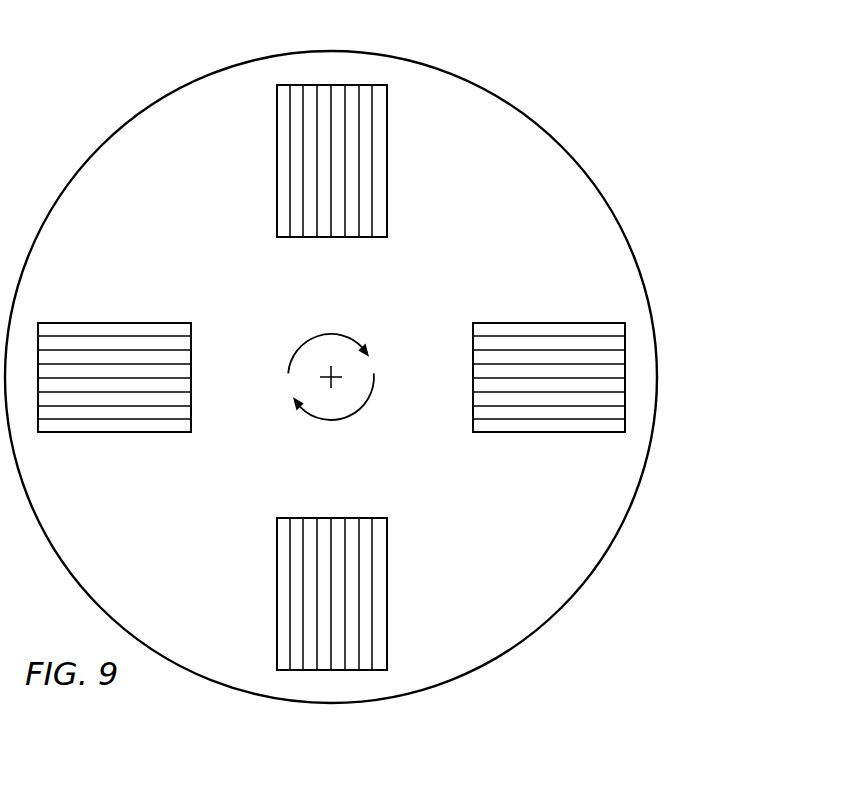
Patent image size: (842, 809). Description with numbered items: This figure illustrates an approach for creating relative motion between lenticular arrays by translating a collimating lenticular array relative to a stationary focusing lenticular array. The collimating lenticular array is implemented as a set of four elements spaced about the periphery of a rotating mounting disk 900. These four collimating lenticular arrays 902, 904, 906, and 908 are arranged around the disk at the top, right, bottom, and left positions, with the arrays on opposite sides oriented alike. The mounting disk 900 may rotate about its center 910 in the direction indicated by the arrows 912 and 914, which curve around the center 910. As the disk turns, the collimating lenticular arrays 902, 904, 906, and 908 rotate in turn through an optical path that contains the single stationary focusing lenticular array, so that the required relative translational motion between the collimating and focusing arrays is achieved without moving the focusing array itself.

The mounting disk 900 is at (462, 70).
The collimating lenticular array 902 is at (387, 153).
The collimating lenticular array 904 is at (549, 433).
The collimating lenticular array 906 is at (276, 599).
The collimating lenticular array 908 is at (111, 322).
The center 910 is at (338, 375).
The arrow 912 is at (332, 421).
The arrow 914 is at (330, 335).